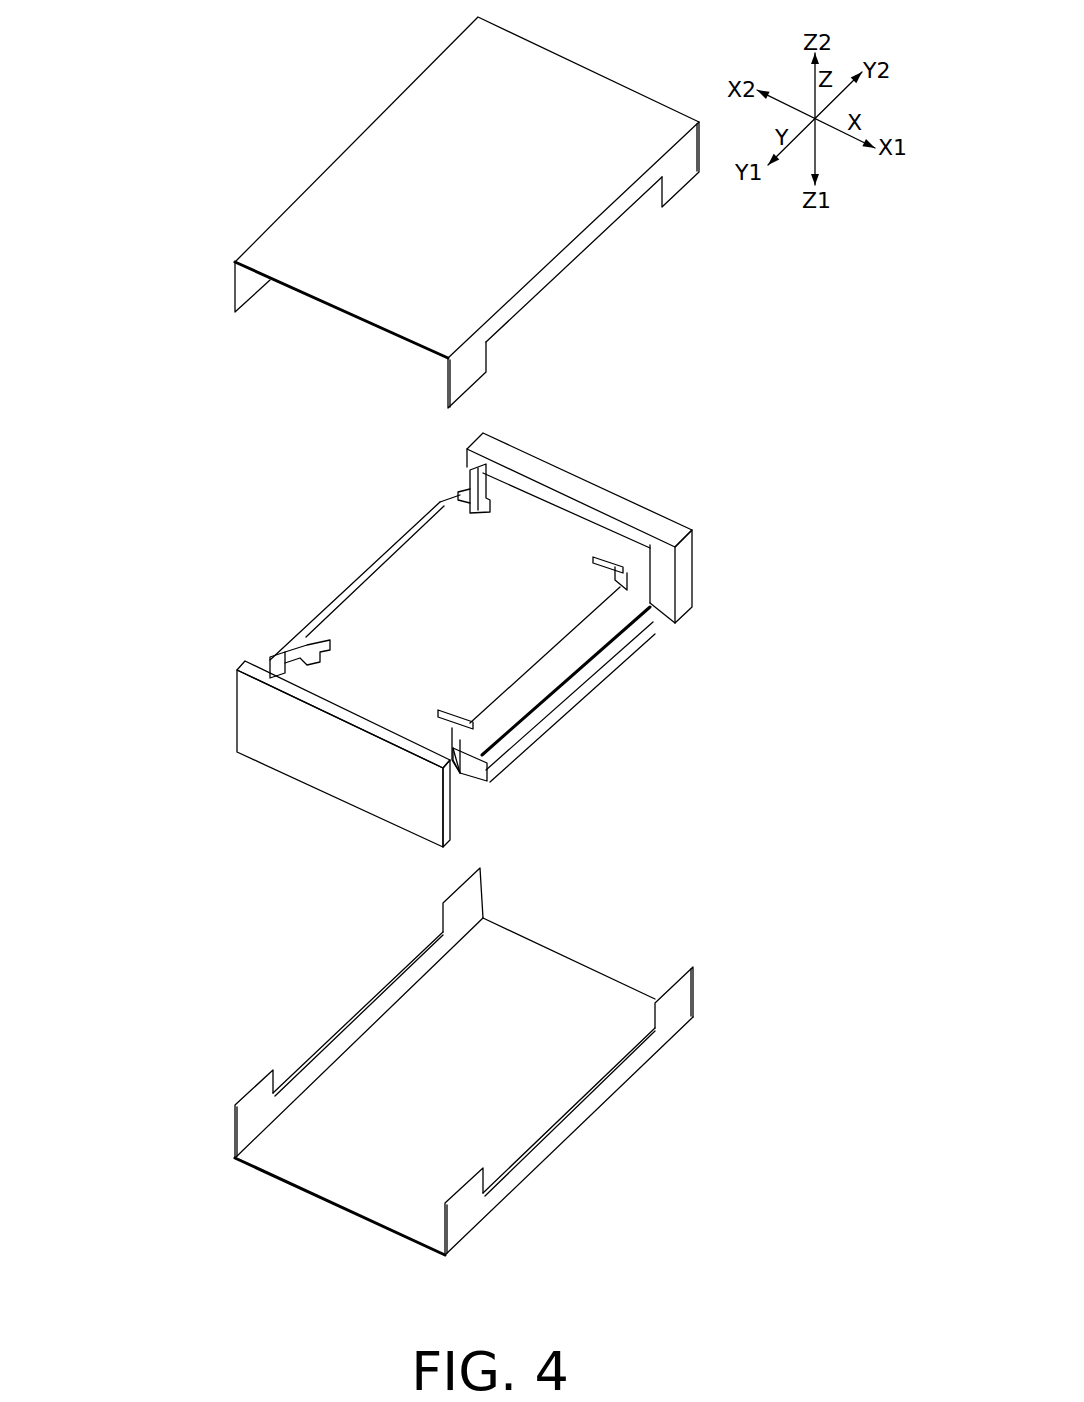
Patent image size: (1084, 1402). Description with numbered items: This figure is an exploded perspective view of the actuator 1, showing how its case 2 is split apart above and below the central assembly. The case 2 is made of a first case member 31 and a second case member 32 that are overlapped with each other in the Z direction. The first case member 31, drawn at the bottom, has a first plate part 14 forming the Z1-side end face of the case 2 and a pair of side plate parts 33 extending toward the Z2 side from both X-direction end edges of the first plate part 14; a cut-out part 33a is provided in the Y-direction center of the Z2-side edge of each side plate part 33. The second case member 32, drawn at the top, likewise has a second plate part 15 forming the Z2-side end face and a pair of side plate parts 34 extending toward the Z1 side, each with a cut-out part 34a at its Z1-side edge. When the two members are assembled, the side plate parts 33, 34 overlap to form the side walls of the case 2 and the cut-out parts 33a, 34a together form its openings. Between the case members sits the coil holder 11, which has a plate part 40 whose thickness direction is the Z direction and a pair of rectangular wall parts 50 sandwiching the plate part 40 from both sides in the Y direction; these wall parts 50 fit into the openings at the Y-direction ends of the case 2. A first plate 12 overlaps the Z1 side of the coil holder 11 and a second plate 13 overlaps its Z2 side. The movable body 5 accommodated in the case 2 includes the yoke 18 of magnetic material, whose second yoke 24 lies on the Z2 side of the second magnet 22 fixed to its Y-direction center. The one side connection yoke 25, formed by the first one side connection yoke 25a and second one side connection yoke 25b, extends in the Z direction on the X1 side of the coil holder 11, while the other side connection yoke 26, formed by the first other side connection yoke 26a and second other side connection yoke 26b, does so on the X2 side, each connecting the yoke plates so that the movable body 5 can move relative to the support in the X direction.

The actuator 1 is at (148, 148).
The case 2 is at (814, 460).
The movable body 5 is at (393, 592).
The coil holder 11 is at (293, 743).
The first plate 12 is at (530, 743).
The second plate 13 is at (533, 697).
The first plate part 14 is at (387, 1155).
The second plate part 15 is at (358, 180).
The yoke 18 is at (357, 657).
The second magnet 22 is at (475, 733).
The second yoke 24 is at (518, 523).
The one side connection yoke 25 is at (693, 767).
The first one side connection yoke 25a is at (453, 750).
The second one side connection yoke 25b is at (640, 585).
The other side connection yoke 26 is at (262, 422).
The first other side connection yoke 26a is at (278, 652).
The second other side connection yoke 26b is at (467, 478).
The first case member 31 is at (668, 940).
The second case member 32 is at (656, 233).
The side plate part 33 is at (260, 1115).
The cut-out part 33a is at (357, 1007).
The side plate part 34 is at (248, 285).
The cut-out part 34a is at (573, 263).
The plate part 40 is at (547, 723).
The wall part 50 is at (610, 492).